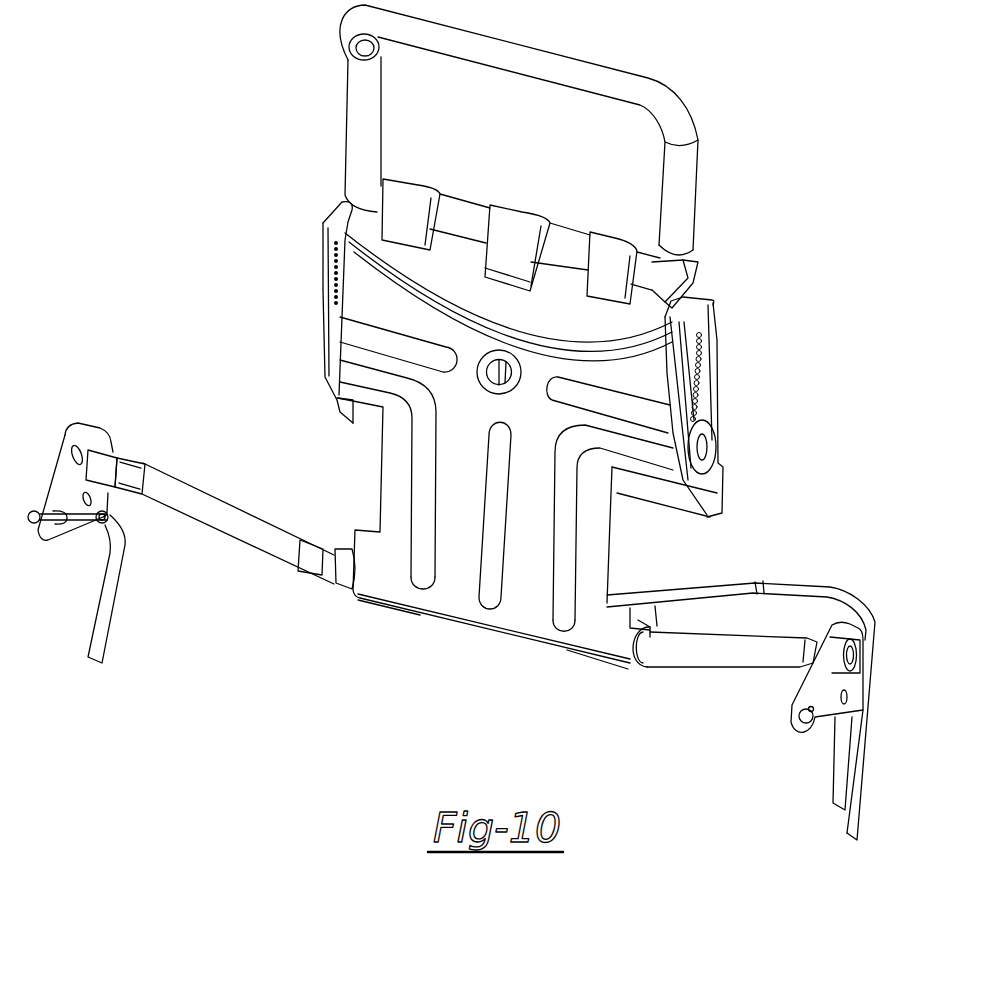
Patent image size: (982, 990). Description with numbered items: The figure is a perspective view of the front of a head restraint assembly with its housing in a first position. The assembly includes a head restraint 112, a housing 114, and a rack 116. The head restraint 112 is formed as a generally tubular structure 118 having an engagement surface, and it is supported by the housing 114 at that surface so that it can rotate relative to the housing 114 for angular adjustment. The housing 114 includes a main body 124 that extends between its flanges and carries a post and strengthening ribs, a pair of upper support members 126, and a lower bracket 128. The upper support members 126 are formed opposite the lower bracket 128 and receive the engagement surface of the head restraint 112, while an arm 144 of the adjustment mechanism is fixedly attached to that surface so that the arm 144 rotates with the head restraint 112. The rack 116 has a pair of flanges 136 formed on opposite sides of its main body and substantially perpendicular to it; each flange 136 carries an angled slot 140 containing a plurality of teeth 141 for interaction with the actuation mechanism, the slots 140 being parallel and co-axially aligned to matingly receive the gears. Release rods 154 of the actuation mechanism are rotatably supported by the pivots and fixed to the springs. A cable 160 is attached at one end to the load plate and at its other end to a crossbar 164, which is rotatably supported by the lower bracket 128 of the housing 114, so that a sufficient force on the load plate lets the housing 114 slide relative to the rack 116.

The head restraint 112 is at (710, 108).
The housing 114 is at (362, 489).
The rack 116 is at (740, 492).
The generally tubular structure 118 is at (690, 182).
The main body 124 is at (537, 437).
The upper support members 126 is at (621, 247).
The lower bracket 128 is at (593, 623).
The flanges 136 is at (327, 253).
The slot 140 is at (702, 363).
The teeth 141 is at (684, 388).
The arm 144 is at (527, 194).
The release rods 154 is at (690, 258).
The cable 160 is at (82, 522).
The crossbar 164 is at (253, 530).